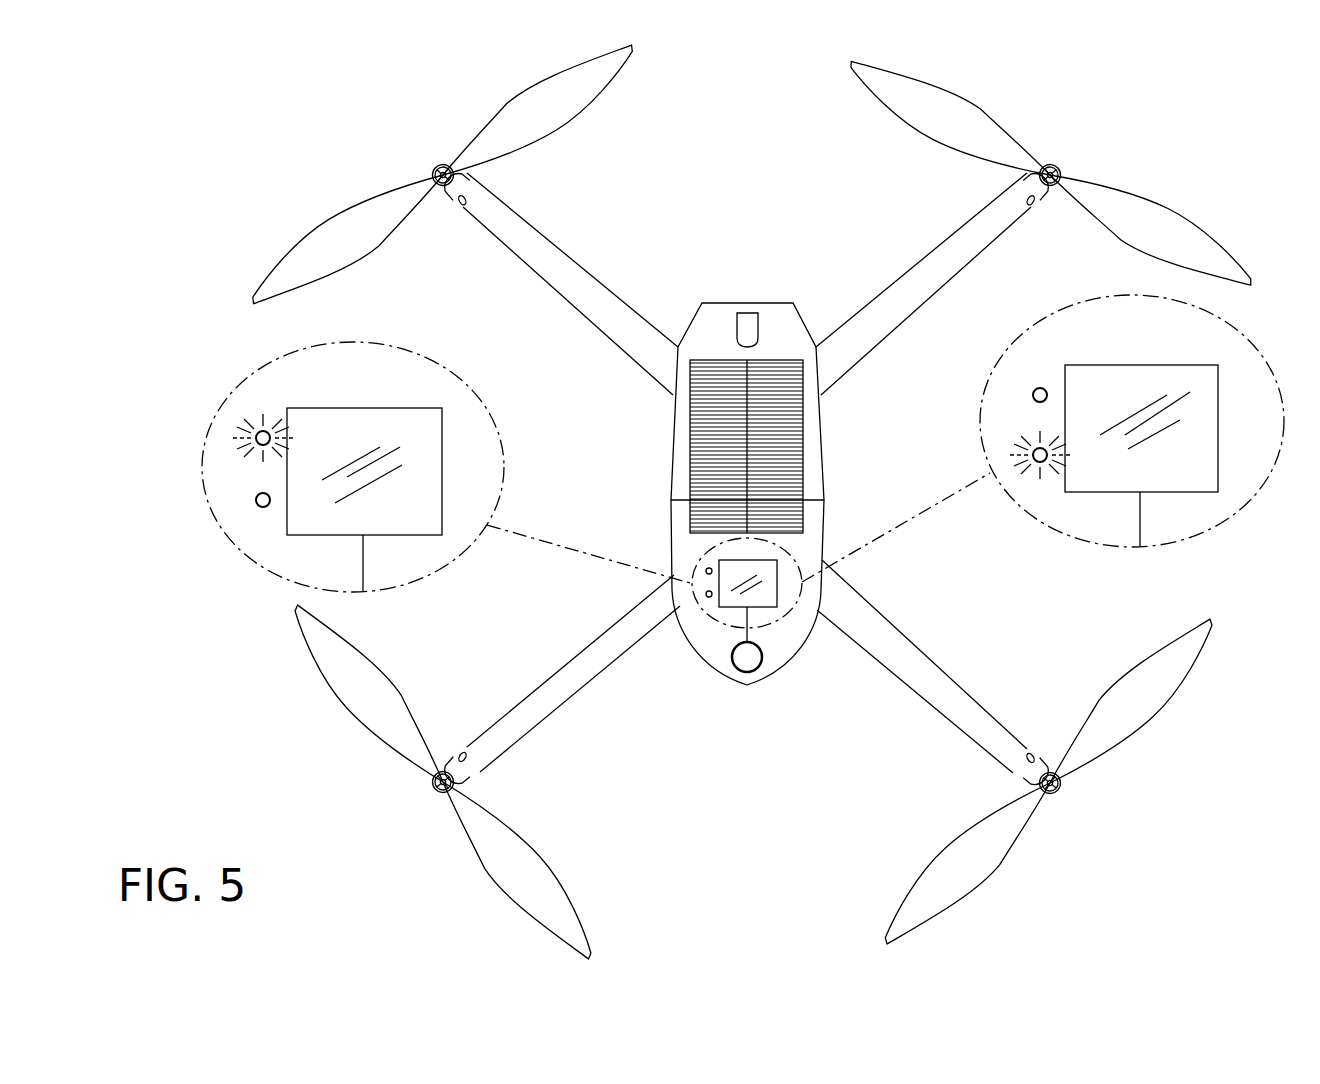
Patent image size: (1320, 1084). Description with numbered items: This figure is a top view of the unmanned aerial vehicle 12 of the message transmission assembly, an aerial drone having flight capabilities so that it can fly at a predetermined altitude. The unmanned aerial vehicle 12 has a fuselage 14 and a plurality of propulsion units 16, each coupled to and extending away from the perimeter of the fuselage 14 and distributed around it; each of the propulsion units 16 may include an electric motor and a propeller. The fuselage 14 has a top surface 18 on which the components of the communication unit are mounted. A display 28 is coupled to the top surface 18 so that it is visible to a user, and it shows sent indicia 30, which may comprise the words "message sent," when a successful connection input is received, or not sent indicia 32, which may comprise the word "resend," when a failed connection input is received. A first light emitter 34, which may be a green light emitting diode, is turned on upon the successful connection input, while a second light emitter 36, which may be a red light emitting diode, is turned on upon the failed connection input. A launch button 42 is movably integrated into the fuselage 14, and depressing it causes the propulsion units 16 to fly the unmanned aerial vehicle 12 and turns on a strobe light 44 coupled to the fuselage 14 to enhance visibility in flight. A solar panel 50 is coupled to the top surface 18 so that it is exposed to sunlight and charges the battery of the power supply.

The unmanned aerial vehicle 12 is at (796, 254).
The fuselage 14 is at (730, 678).
The propulsion units 16 is at (573, 270).
The top surface 18 is at (822, 495).
The display 28 is at (718, 560).
The sent indicia 30 is at (337, 416).
The not sent indicia 32 is at (1160, 463).
The first light emitter 34 is at (258, 433).
The second light emitter 36 is at (1040, 462).
The launch button 42 is at (748, 313).
The strobe light 44 is at (758, 662).
The solar panel 50 is at (690, 408).